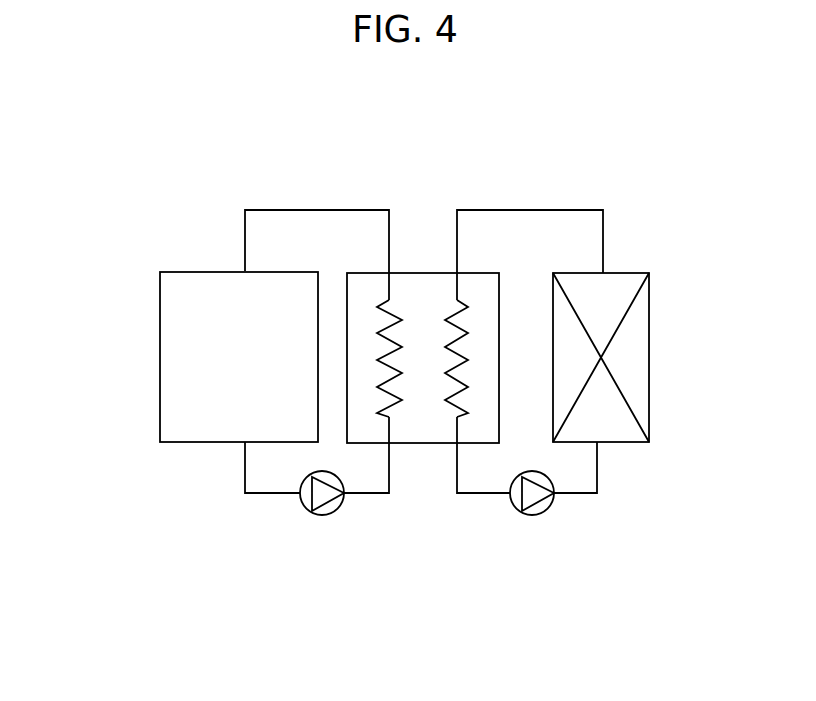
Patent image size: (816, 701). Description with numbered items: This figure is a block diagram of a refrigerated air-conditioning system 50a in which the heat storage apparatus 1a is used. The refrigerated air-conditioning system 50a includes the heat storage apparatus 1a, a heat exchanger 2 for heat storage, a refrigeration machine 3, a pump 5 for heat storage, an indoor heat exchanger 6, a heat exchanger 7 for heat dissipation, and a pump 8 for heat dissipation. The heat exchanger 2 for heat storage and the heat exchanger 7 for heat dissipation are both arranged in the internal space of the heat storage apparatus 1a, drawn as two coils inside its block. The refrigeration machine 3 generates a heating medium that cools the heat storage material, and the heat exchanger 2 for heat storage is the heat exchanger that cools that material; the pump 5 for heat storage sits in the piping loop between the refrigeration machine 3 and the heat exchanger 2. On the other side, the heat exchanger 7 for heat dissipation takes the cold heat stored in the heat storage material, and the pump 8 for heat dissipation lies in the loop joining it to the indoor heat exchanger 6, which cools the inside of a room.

The refrigerated air-conditioning system 50a is at (572, 133).
The refrigeration machine 3 is at (159, 336).
The heat storage apparatus 1a is at (418, 273).
The heat exchanger for heat storage 2 is at (379, 333).
The heat exchanger for heat dissipation 7 is at (468, 333).
The indoor heat exchanger 6 is at (633, 353).
The pump for heat storage 5 is at (321, 516).
The pump for heat dissipation 8 is at (528, 516).